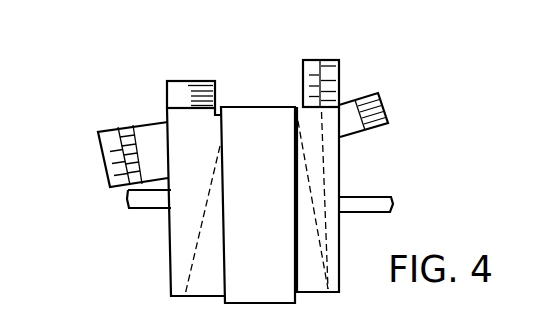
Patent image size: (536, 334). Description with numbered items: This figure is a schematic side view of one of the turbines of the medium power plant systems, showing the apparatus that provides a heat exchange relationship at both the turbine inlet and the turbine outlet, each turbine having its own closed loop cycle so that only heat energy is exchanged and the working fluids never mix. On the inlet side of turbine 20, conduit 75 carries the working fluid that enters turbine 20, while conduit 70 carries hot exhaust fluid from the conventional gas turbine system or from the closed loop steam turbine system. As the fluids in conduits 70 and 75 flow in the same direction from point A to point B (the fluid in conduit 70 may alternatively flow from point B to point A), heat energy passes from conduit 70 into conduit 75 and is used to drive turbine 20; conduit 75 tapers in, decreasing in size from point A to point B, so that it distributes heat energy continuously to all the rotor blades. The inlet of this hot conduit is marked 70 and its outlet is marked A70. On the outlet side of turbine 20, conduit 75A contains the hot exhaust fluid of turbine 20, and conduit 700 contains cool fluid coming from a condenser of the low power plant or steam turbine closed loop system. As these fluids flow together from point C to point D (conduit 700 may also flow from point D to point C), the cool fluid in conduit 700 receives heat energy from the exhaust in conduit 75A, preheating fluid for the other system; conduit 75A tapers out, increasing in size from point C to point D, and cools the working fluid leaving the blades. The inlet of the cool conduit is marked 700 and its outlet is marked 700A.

The turbine 20 is at (275, 192).
The conduit 70 is at (108, 168).
The conduit 75 is at (132, 123).
The conduit 700 is at (386, 111).
The outlet of conduit 700 700A is at (338, 80).
The conduit 75A is at (312, 60).
The outlet of conduit 70 A70 is at (183, 81).
The point A is at (167, 96).
The point B is at (220, 144).
The point C is at (295, 152).
The point D is at (308, 130).